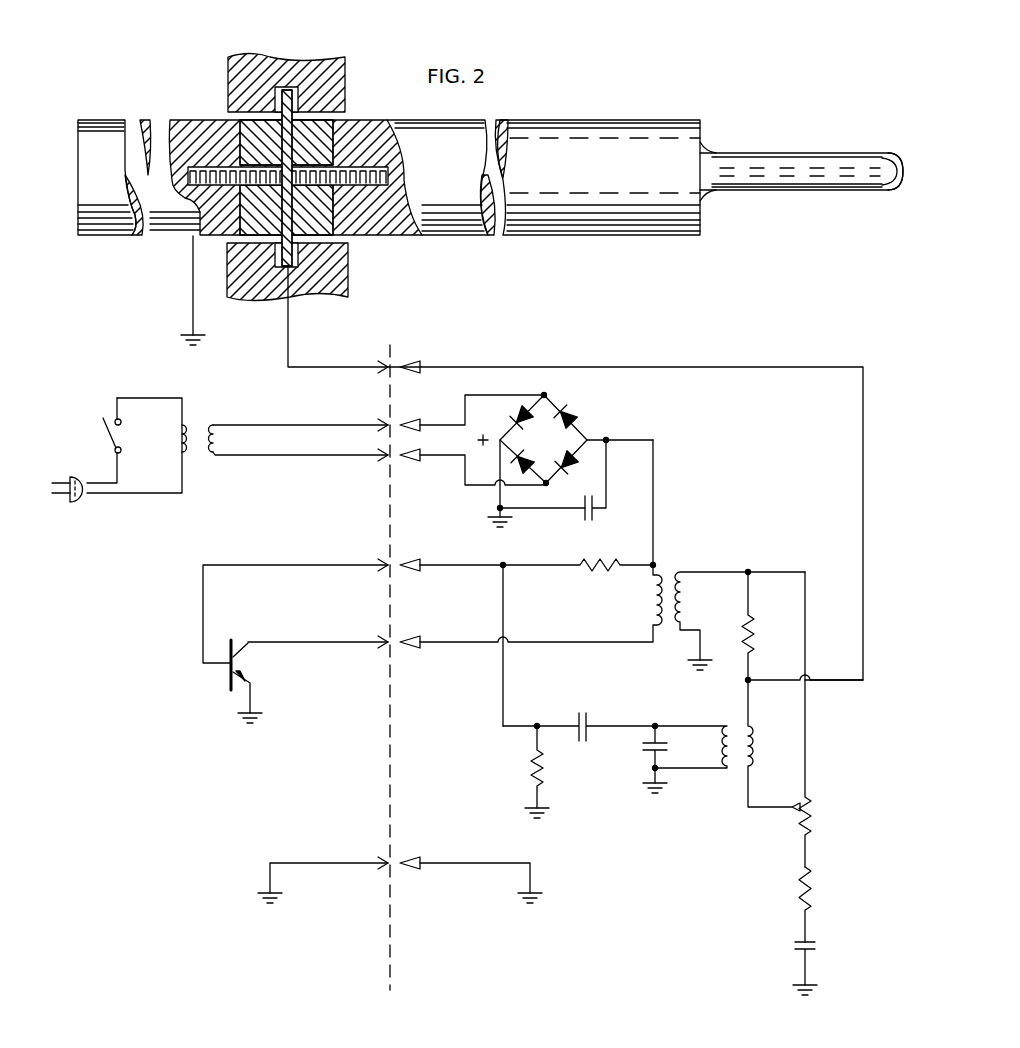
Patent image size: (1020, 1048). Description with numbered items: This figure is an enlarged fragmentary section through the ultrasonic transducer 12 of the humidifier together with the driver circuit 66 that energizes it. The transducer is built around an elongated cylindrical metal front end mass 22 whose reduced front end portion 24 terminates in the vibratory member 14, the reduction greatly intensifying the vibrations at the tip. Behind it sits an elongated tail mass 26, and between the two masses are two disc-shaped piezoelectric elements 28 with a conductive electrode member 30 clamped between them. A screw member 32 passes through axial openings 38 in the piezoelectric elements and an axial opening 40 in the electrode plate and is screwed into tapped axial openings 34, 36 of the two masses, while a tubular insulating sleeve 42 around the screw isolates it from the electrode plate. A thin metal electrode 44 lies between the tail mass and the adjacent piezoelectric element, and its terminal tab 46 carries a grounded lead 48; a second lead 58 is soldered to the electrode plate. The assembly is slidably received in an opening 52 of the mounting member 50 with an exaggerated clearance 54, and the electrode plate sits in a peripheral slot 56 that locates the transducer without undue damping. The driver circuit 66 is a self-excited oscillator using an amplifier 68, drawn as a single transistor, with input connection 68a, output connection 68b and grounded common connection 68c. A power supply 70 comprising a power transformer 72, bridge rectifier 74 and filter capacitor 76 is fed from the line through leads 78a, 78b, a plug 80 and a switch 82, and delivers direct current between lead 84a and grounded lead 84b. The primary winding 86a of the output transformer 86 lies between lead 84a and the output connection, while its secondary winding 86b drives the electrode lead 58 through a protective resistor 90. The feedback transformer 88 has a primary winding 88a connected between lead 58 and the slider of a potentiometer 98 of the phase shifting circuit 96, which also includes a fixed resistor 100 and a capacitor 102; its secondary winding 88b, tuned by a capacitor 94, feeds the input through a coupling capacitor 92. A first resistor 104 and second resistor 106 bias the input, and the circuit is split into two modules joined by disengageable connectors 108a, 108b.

The ultrasonic transducer 12 is at (692, 86).
The vibratory member 14 is at (891, 152).
The front end mass 22 is at (440, 238).
The front end portion 24 is at (797, 174).
The tail mass 26 is at (170, 124).
The piezoelectric elements 28 is at (268, 248).
The electrode member 30 is at (305, 262).
The screw member 32 is at (362, 156).
The tapped axial opening 34 is at (355, 196).
The tapped axial opening 36 is at (149, 177).
The axial opening 38 is at (308, 140).
The axial opening 40 is at (272, 142).
The insulating sleeve 42 is at (320, 125).
The thin metal electrode 44 is at (192, 236).
The terminal tab 46 is at (197, 240).
The lead 48 is at (192, 292).
The mounting member 50 is at (270, 58).
The opening 52 is at (252, 170).
The clearance 54 is at (345, 270).
The slot 56 is at (285, 300).
The lead 58 is at (286, 357).
The driver circuit 66 is at (765, 433).
The amplifier 68 is at (218, 679).
The input connection 68a is at (270, 566).
The output connection 68b is at (298, 645).
The common connection 68c is at (256, 700).
The power supply 70 is at (603, 409).
The power transformer 72 is at (196, 458).
The bridge rectifier 74 is at (630, 445).
The filter capacitor 76 is at (600, 519).
The lead 78a is at (103, 478).
The lead 78b is at (100, 493).
The electrical plug 80 is at (77, 503).
The switch 82 is at (100, 432).
The power supply lead 84a is at (655, 507).
The power supply lead 84b is at (497, 495).
The output transformer 86 is at (664, 638).
The primary winding 86a is at (651, 600).
The secondary winding 86b is at (685, 601).
The feedback transformer 88 is at (740, 770).
The primary winding 88a is at (756, 740).
The secondary winding 88b is at (731, 736).
The protective resistor 90 is at (753, 643).
The coupling capacitor 92 is at (586, 710).
The capacitor 94 is at (641, 749).
The phase shifting circuit 96 is at (820, 938).
The potentiometer 98 is at (812, 810).
The fixed resistor 100 is at (812, 880).
The capacitor 102 is at (818, 950).
The first resistor 104 is at (580, 560).
The second resistor 106 is at (532, 768).
The disengageable connector 108a is at (359, 891).
The disengageable connector 108b is at (435, 889).